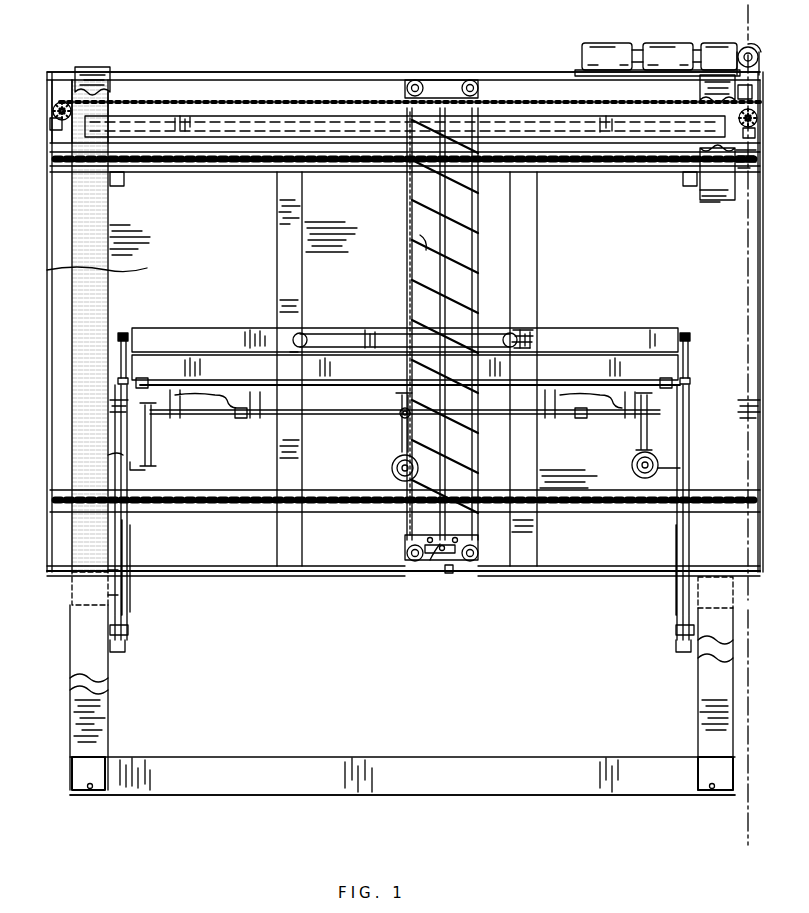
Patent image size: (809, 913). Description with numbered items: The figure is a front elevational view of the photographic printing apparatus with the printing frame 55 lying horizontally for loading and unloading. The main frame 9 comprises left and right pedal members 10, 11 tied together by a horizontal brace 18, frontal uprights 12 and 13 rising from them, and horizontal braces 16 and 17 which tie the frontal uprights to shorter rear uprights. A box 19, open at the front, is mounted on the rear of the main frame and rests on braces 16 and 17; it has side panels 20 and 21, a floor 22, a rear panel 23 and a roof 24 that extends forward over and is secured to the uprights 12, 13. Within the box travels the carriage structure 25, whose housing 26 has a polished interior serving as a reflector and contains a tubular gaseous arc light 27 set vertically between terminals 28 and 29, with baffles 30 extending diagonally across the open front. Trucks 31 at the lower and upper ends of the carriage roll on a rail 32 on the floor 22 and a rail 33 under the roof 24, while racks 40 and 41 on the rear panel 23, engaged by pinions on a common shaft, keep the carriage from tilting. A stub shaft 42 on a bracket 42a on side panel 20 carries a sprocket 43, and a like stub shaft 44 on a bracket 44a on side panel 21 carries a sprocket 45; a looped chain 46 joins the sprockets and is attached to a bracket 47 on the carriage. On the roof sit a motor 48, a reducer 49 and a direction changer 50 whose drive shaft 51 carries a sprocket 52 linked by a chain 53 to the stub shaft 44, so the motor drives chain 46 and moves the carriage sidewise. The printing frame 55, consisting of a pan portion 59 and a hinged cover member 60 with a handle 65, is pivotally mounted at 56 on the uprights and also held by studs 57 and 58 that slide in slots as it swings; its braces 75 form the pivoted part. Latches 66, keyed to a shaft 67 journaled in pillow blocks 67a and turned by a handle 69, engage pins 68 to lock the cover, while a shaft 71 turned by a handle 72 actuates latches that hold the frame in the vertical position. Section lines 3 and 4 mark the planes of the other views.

The section line 3- 3 is at (748, 12).
The section line 4- 4 is at (40, 80).
The main frame 9 is at (446, 808).
The pedal member 10 is at (90, 794).
The pedal member 11 is at (714, 792).
The frontal upright 12 is at (100, 74).
The frontal upright 13 is at (698, 692).
The horizontal brace 16 is at (72, 593).
The horizontal brace 17 is at (686, 594).
The horizontal brace 18 is at (392, 759).
The box 19 is at (577, 589).
The side panel 20 is at (54, 226).
The side panel 21 is at (768, 314).
The floor 22 is at (250, 578).
The rear panel 23 is at (50, 271).
The roof 24 is at (345, 78).
The carriage structure 25 is at (461, 324).
The housing 26 is at (408, 290).
The tubular gaseous arc light 27 is at (440, 218).
The terminal 28 is at (440, 575).
The terminal 29 is at (472, 86).
The baffles 30 is at (415, 243).
The trucks 31 is at (445, 88).
The rail 32 is at (355, 570).
The rail 33 is at (240, 77).
The rack 40 is at (240, 163).
The rack 41 is at (235, 510).
The stub shaft 42 is at (53, 116).
The bracket 42a is at (50, 126).
The sprocket 43 is at (70, 72).
The stub shaft 44 is at (757, 118).
The bracket 44a is at (750, 136).
The sprocket 45 is at (755, 134).
The chain 46 is at (192, 100).
The bracket 47 is at (415, 94).
The motor 48 is at (595, 46).
The reducer 49 is at (663, 46).
The direction changer 50 is at (708, 46).
The drive shaft 51 is at (742, 47).
The sprocket 52 is at (746, 35).
The chain 53 is at (757, 100).
The printing frame 55 is at (583, 358).
The pivot 56 is at (122, 640).
The stud 57 is at (144, 466).
The stud 58 is at (647, 476).
The pan portion 59 is at (345, 378).
The cover member 60 is at (222, 342).
The handle 65 is at (340, 333).
The latch 66 is at (125, 342).
The shaft 67 is at (318, 363).
The pillow block 67a is at (152, 380).
The pin 68 is at (118, 320).
The handle 69 is at (640, 446).
The shaft 71 is at (400, 422).
The handle 72 is at (394, 470).
The braces 75 is at (121, 593).